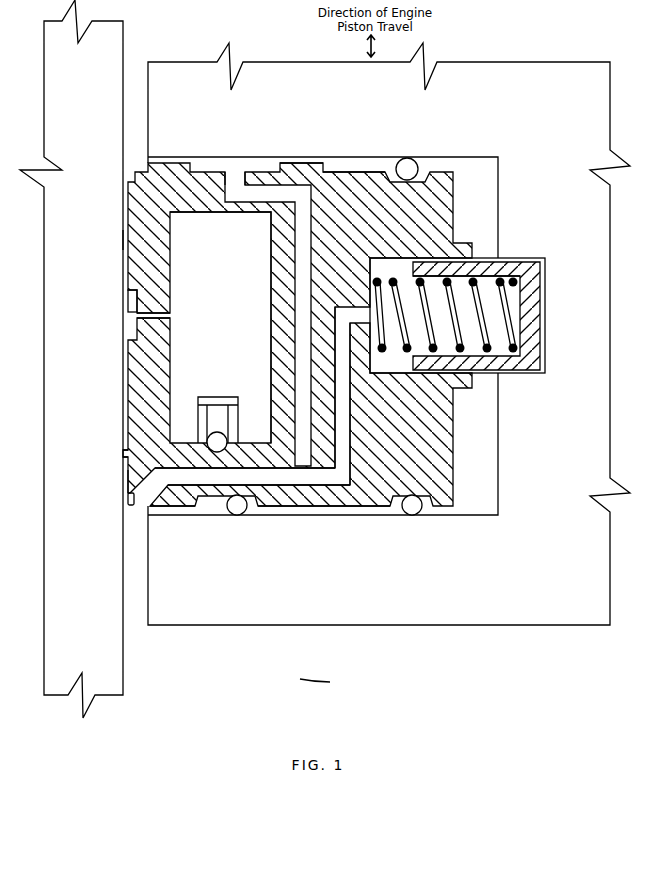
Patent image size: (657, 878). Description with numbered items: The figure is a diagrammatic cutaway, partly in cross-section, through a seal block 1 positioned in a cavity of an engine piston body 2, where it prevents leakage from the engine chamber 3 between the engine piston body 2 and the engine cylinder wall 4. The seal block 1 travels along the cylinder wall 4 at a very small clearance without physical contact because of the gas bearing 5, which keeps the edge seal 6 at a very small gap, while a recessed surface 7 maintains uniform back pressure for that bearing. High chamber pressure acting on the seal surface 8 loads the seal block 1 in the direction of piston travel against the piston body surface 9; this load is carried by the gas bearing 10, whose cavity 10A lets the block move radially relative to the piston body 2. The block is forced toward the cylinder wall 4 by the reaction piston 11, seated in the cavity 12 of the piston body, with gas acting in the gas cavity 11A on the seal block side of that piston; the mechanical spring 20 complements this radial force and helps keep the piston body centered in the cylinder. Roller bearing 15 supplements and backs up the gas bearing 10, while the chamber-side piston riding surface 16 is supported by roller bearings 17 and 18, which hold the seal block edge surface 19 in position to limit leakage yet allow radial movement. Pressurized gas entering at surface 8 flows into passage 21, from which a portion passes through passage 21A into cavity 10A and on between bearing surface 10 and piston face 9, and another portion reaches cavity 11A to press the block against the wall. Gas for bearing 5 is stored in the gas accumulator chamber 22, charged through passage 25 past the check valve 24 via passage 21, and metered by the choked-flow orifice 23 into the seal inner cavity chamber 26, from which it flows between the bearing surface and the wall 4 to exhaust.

The seal block 1 is at (455, 432).
The engine piston body 2 is at (526, 62).
The engine chamber 3 is at (320, 683).
The engine cylinder wall 4 is at (123, 58).
The gas bearing 5 is at (125, 240).
The edge seal 6 is at (128, 472).
The recessed surface 7 is at (125, 452).
The seal surface 8 is at (143, 503).
The piston body surface 9 is at (352, 158).
The gas bearing 10 is at (297, 158).
The cavity 10A is at (238, 168).
The reaction piston 11 is at (542, 311).
The gas cavity 11A is at (398, 270).
The cavity 12 is at (540, 376).
The roller bearing 15 is at (420, 163).
The chamber-side piston riding surface 16 is at (322, 517).
The roller bearing 17 is at (237, 516).
The roller bearing 18 is at (410, 516).
The seal block edge surface 19 is at (177, 516).
The mechanical spring 20 is at (518, 303).
The passage 21 is at (283, 478).
The passage 21A is at (305, 420).
The gas accumulator chamber 22 is at (225, 275).
The choked-flow orifice 23 is at (162, 317).
The check valve 24 is at (242, 424).
The passage 25 is at (184, 440).
The seal inner cavity chamber 26 is at (130, 326).